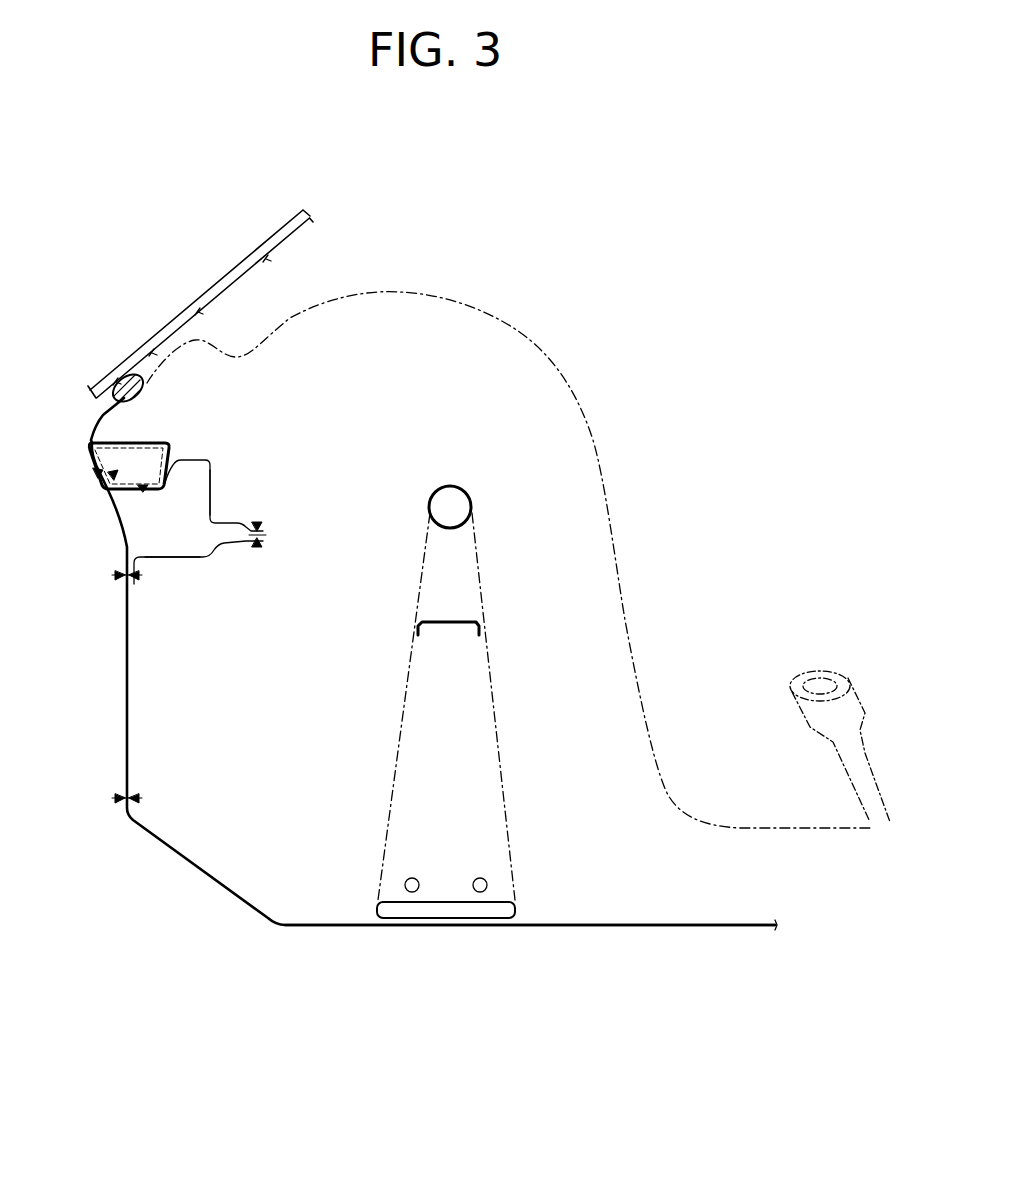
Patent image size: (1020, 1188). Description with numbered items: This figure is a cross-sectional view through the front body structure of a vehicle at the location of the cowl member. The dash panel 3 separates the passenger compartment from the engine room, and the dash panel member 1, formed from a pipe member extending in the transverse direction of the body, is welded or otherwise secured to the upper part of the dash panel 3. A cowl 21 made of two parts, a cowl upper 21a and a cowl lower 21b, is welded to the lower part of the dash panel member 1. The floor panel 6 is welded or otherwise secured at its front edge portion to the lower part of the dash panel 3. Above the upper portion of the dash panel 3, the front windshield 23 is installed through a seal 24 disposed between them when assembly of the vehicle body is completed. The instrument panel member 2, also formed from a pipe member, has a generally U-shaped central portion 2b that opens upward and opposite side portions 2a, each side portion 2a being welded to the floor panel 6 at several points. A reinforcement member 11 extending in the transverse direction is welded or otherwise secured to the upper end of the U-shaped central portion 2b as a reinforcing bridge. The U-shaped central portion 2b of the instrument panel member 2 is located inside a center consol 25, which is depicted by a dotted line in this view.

The dash panel member 1 is at (162, 442).
The instrument panel member 2 is at (454, 684).
The side portion 2a is at (395, 750).
The U-shaped central portion 2b is at (432, 500).
The dash panel 3 is at (127, 675).
The floor panel 6 is at (505, 928).
The reinforcement member 11 is at (415, 628).
The cowl 21 is at (212, 563).
The cowl upper 21a is at (210, 496).
The cowl lower 21b is at (175, 562).
The front windshield 23 is at (158, 325).
The seal 24 is at (97, 412).
The center consol 25 is at (540, 343).